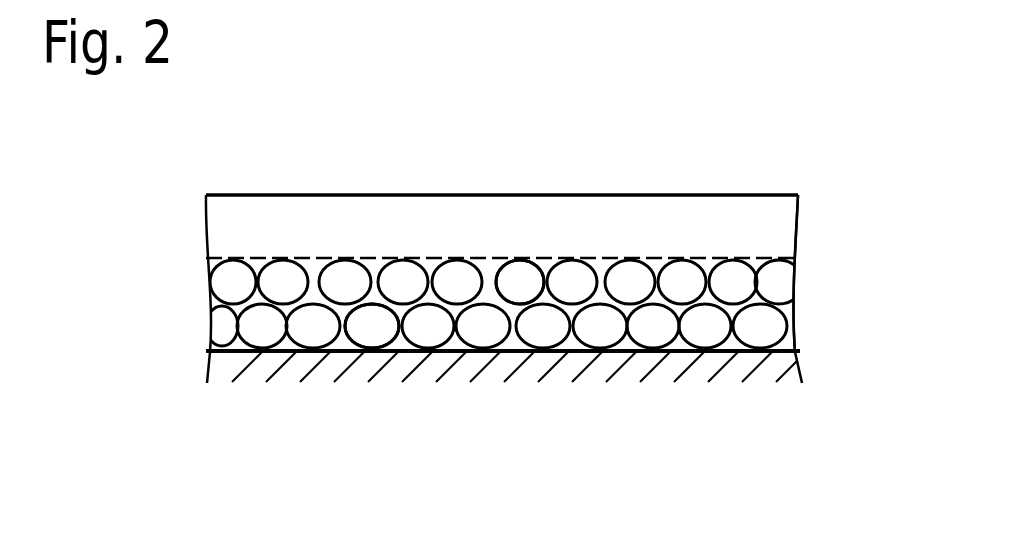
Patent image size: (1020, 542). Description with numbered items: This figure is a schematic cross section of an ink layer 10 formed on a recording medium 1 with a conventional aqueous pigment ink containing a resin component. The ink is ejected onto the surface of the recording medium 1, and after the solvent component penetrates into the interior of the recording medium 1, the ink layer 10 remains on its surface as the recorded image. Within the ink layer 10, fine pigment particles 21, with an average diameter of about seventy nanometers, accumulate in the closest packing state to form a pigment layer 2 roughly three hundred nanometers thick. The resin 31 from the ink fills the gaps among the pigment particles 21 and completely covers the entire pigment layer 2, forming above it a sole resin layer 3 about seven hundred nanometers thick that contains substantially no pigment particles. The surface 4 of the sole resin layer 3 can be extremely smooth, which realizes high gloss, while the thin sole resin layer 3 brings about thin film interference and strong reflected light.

The recording medium 1 is at (737, 365).
The pigment layer 2 is at (157, 258).
The sole resin layer 3 is at (157, 197).
The surface of sole resin layer 4 is at (372, 196).
The ink layer 10 is at (105, 197).
The pigment particle 21 is at (517, 275).
The resin 31 is at (797, 308).